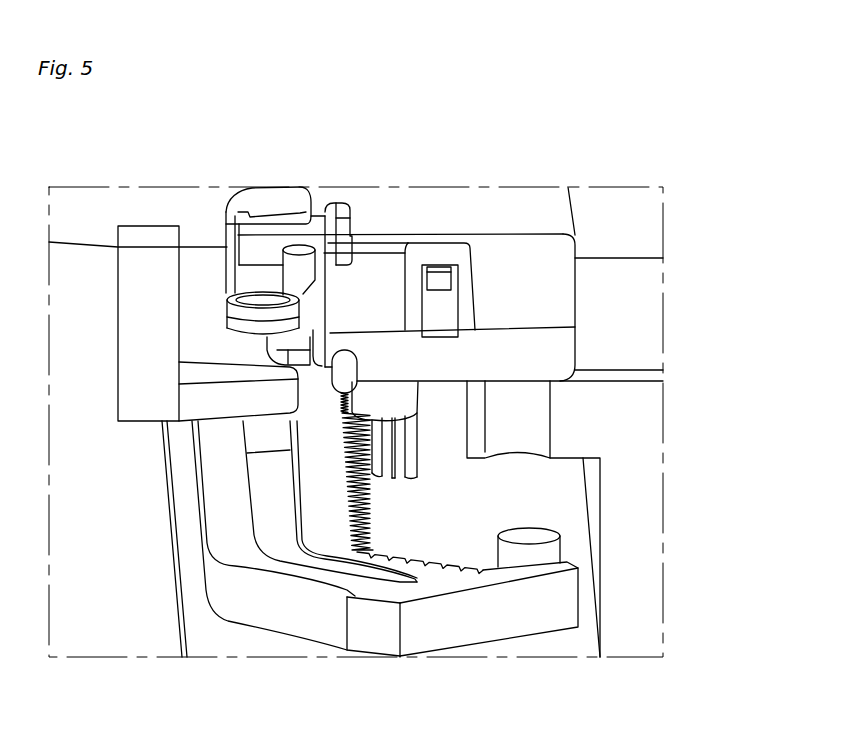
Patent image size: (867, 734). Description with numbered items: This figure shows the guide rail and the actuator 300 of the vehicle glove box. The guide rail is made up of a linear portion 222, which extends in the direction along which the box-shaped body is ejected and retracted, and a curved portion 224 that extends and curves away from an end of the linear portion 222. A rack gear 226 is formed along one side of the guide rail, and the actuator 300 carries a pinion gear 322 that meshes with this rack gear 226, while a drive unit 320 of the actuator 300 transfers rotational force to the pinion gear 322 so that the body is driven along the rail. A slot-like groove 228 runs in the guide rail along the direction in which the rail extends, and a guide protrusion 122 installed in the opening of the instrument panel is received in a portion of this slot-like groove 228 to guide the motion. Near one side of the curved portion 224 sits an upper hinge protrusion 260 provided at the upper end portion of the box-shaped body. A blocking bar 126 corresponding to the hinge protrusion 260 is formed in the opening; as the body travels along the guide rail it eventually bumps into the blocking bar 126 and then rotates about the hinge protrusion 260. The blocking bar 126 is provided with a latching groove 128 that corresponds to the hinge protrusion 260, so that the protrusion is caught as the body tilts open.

The actuator 300 is at (540, 190).
The drive unit 320 is at (565, 286).
The pinion gear 322 is at (412, 463).
The blocking bar 126 is at (653, 402).
The latching groove 128 is at (530, 425).
The upper hinge protrusion 260 is at (553, 552).
The guide protrusion 122 is at (257, 438).
The linear portion 222 is at (213, 470).
The slot-like groove 228 is at (267, 522).
The curved portion 224 is at (282, 570).
The rack gear 226 is at (373, 537).